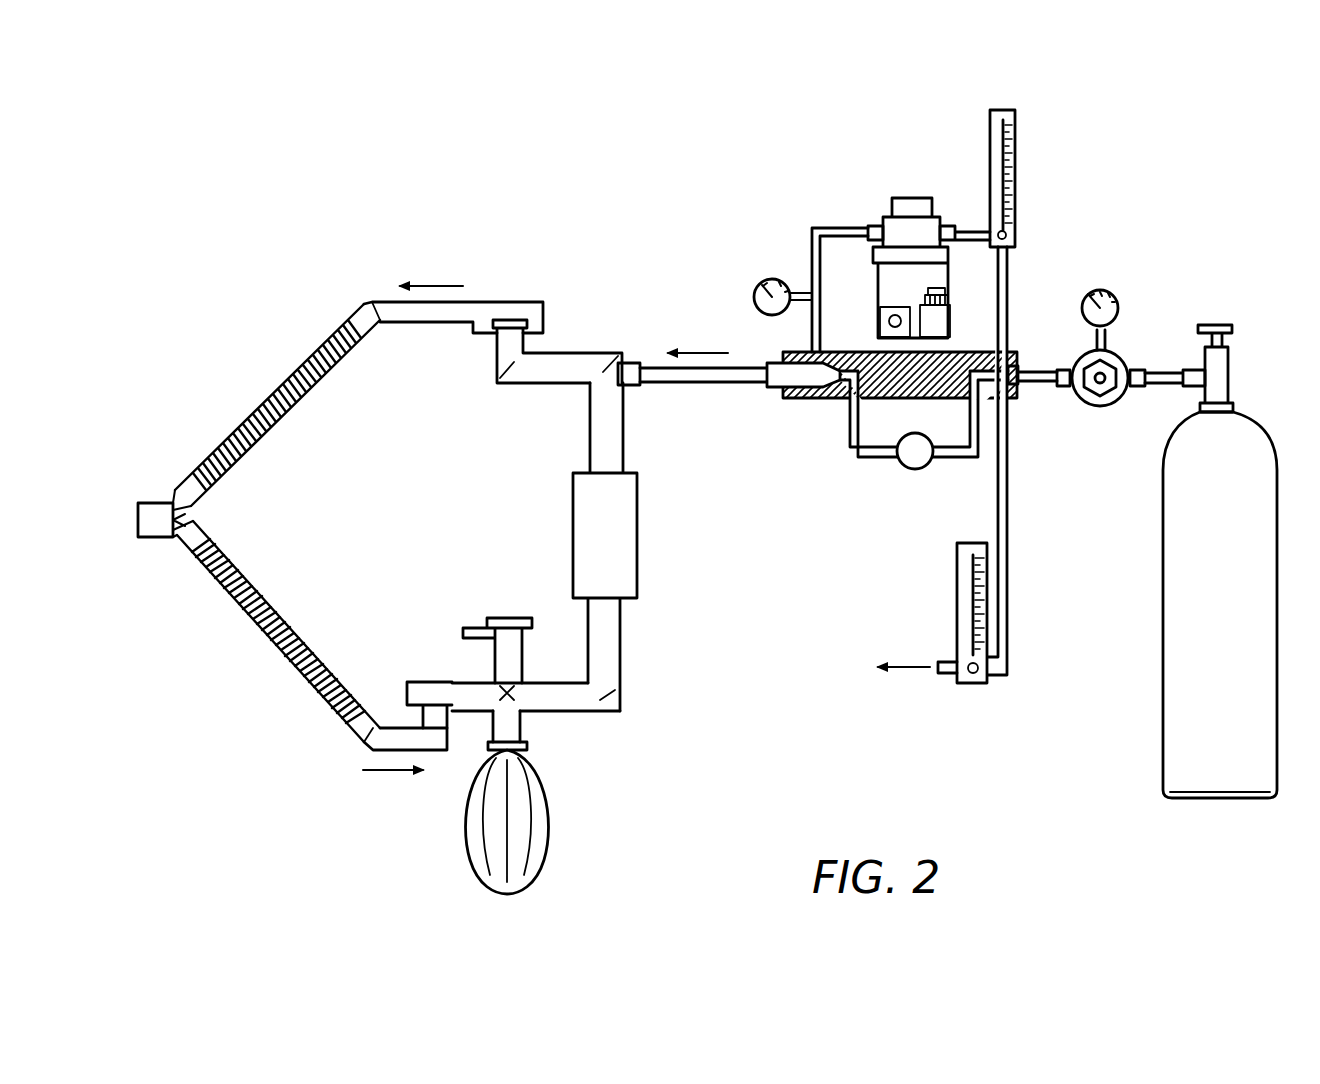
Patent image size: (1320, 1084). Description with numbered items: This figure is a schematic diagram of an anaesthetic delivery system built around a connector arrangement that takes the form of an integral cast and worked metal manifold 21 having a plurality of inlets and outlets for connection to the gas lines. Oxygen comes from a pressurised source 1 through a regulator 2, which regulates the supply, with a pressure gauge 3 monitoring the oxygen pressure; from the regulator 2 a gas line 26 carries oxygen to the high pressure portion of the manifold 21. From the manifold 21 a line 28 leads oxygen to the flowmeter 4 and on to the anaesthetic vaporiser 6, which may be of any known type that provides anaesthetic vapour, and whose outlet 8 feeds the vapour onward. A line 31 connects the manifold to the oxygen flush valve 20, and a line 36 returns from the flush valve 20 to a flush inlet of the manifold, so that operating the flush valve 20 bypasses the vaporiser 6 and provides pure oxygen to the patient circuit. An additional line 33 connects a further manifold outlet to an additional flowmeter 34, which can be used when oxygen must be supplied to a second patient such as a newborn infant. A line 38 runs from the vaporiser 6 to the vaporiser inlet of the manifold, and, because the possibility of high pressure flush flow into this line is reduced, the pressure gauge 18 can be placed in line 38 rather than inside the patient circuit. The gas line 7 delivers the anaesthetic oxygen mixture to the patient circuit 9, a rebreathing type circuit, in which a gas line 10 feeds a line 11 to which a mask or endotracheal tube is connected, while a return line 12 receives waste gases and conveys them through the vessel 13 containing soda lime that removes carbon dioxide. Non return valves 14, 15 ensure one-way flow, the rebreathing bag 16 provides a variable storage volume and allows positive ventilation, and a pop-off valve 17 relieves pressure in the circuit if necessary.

The pressurised source of oxygen 1 is at (1178, 692).
The regulator 2 is at (1102, 406).
The pressure gauge 3 is at (1112, 297).
The flowmeter 4 is at (1016, 148).
The anaesthetic vaporiser 6 is at (906, 204).
The gas line 7 is at (706, 382).
The outlet of the vaporiser 8 is at (874, 228).
The patient circuit 9 is at (355, 290).
The gas line 10 is at (274, 396).
The line to the patient 11 is at (158, 537).
The return line 12 is at (306, 688).
The vessel 13 is at (634, 580).
The non return valve 14 is at (430, 696).
The non return valve 15 is at (510, 322).
The rebreathing bag 16 is at (468, 838).
The pop-off valve 17 is at (506, 618).
The pressure gauge 18 is at (752, 297).
The flush valve 20 is at (908, 468).
The manifold 21 is at (808, 402).
The gas line 26 is at (1036, 370).
The line 28 is at (1008, 264).
The line 31 is at (960, 458).
The line 33 is at (1008, 592).
The additional flowmeter 34 is at (965, 686).
The line 36 is at (850, 442).
The line 38 is at (808, 240).